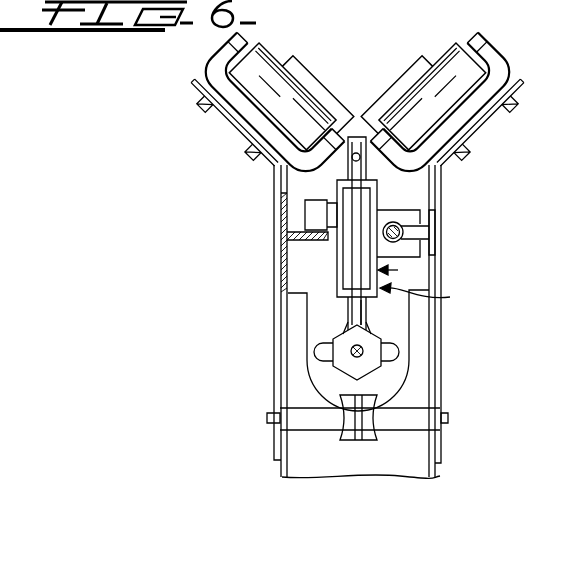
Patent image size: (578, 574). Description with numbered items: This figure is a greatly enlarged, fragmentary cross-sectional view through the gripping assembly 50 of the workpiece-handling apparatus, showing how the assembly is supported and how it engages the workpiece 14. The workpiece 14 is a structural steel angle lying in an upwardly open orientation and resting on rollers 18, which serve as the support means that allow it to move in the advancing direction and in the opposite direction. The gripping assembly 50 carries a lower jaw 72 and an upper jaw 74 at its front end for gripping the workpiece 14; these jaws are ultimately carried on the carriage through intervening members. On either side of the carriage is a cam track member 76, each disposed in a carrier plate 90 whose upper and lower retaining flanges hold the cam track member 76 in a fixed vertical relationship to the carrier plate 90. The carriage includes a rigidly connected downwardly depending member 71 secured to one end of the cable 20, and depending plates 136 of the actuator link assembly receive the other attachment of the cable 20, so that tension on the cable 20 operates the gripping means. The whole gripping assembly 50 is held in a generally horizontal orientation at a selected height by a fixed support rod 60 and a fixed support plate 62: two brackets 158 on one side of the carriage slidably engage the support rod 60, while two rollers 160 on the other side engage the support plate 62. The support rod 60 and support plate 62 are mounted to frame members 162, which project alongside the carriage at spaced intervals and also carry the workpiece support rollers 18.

The workpiece 14 is at (320, 80).
The rollers 18 is at (265, 60).
The cable 20 is at (362, 355).
The gripping assembly 50 is at (333, 259).
The support rod 60 is at (420, 232).
The support plate 62 is at (283, 240).
The downwardly depending member 71 is at (367, 309).
The lower jaw 72 is at (348, 170).
The upper jaw 74 is at (364, 152).
The cam track member 76 is at (403, 271).
The carrier plate 90 is at (429, 297).
The depending plates 136 is at (348, 316).
The brackets 158 is at (408, 212).
The rollers 160 is at (313, 213).
The frame members 162 is at (275, 333).